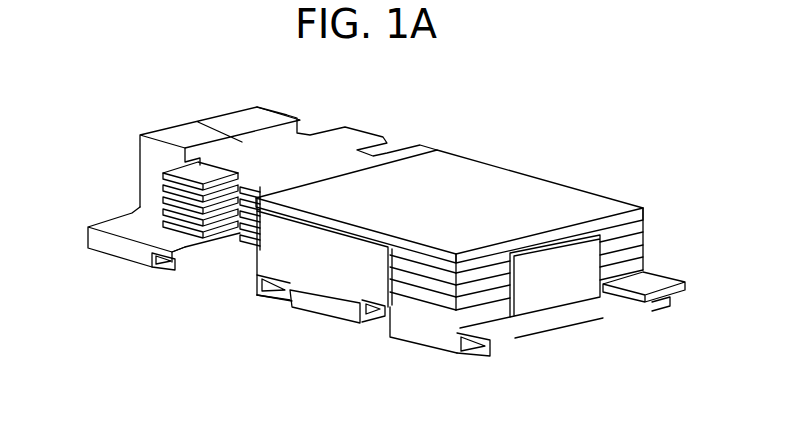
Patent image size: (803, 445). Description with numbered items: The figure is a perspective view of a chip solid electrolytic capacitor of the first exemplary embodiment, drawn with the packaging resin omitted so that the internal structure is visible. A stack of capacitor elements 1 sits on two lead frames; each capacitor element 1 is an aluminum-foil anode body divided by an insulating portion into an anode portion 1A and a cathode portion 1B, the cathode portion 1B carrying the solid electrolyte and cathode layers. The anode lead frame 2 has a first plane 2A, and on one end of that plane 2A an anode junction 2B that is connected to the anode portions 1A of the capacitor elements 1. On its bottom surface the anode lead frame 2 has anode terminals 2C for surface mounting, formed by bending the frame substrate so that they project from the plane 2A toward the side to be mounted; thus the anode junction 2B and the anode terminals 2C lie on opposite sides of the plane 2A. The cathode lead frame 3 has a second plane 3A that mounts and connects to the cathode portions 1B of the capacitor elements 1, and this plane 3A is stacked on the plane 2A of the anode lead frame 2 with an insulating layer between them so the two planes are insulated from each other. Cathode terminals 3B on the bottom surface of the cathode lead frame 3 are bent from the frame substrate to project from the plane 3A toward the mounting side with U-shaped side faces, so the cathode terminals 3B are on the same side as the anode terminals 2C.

The capacitor element 1 is at (414, 164).
The anode portion 1A is at (330, 143).
The cathode portion 1B is at (552, 190).
The anode lead frame 2 is at (354, 231).
The plane 2A is at (560, 313).
The anode junction 2B is at (185, 130).
The anode terminal 2C is at (115, 258).
The cathode lead frame 3 is at (432, 326).
The plane 3A is at (653, 275).
The cathode terminal 3B is at (213, 280).